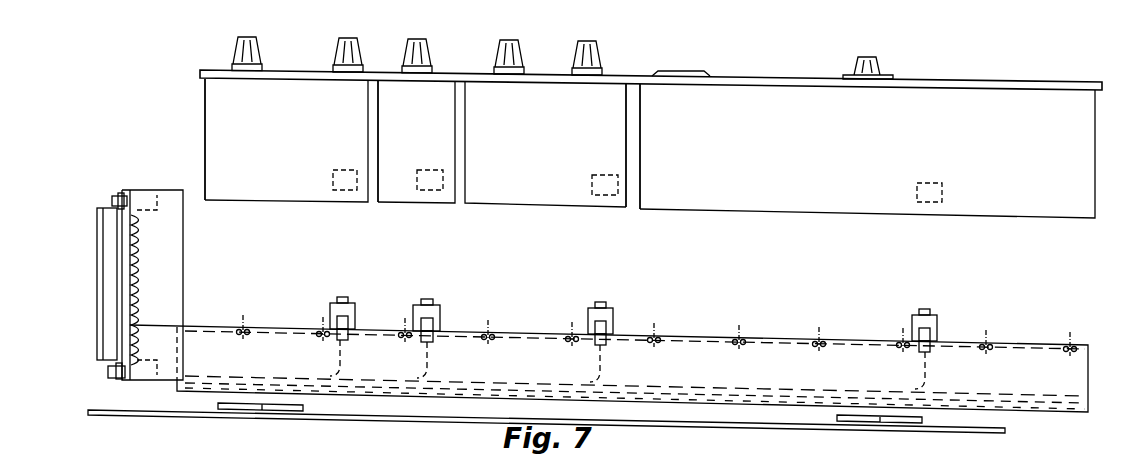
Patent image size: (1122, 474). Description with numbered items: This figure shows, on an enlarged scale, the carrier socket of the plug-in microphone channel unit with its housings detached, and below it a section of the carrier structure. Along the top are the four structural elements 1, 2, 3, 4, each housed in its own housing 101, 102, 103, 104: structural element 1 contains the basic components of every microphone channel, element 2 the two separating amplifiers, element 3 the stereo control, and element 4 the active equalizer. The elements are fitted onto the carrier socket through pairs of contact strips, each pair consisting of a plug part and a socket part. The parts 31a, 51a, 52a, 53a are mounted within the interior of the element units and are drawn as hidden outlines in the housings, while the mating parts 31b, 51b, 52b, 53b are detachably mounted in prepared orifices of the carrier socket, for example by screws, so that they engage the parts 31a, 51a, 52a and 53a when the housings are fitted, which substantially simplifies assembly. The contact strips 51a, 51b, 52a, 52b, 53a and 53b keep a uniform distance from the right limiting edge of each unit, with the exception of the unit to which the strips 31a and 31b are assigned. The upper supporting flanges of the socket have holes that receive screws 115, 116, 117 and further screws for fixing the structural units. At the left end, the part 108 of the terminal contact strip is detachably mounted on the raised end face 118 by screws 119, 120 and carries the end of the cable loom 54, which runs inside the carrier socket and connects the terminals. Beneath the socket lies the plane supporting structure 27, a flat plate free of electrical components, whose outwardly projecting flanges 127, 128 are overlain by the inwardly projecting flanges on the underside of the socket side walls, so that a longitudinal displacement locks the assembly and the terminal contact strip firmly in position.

The structural element 1 is at (822, 98).
The structural element 2 is at (538, 95).
The structural element 3 is at (443, 90).
The structural element 4 is at (292, 90).
The housing 101 is at (738, 102).
The housing 102 is at (613, 95).
The housing 103 is at (390, 88).
The housing 104 is at (222, 90).
The supporting structure 27 is at (700, 428).
The contact strip part 31a is at (923, 201).
The contact strip part 31b is at (937, 324).
The contact strip part 51a is at (608, 193).
The contact strip part 51b is at (613, 318).
The contact strip part 52a is at (437, 190).
The contact strip part 52b is at (440, 312).
The contact strip part 53a is at (350, 186).
The contact strip part 53b is at (357, 305).
The cable loom 54 is at (212, 372).
The contact strip part 108 is at (112, 325).
The screw 115 is at (242, 305).
The screw 116 is at (323, 305).
The screw 117 is at (416, 305).
The raised end face 118 is at (172, 200).
The screw 119 is at (118, 197).
The screw 120 is at (113, 373).
The outwardly projecting flange 127 is at (260, 411).
The outwardly projecting flange 128 is at (878, 424).